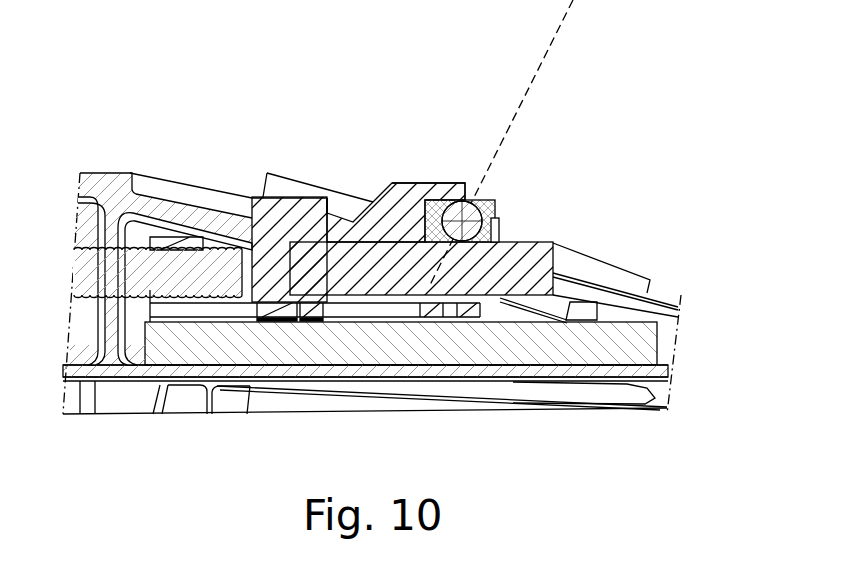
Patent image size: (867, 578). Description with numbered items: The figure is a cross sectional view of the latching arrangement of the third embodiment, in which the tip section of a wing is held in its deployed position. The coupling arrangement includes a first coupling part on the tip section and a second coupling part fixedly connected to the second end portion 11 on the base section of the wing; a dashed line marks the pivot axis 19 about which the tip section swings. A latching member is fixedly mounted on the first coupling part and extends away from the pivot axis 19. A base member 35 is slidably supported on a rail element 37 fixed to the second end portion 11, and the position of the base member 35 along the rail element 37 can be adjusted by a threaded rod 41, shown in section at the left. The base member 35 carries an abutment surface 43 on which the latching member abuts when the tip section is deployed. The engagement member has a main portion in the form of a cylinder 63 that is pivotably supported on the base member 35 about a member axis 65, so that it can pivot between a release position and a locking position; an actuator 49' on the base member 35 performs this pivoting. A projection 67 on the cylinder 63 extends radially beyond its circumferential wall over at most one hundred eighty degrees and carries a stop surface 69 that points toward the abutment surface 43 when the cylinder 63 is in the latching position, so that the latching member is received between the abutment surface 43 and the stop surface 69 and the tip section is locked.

The second end portion 11 is at (108, 363).
The pivot axis 19 is at (553, 44).
The base member 35 is at (381, 214).
The rail element 37 is at (490, 366).
The threaded rod 41 is at (148, 270).
The abutment surface 43 is at (421, 184).
The actuator 49' is at (293, 200).
The cylinder 63 is at (543, 253).
The member axis 65 is at (577, 268).
The projection 67 is at (500, 226).
The stop surface 69 is at (461, 246).